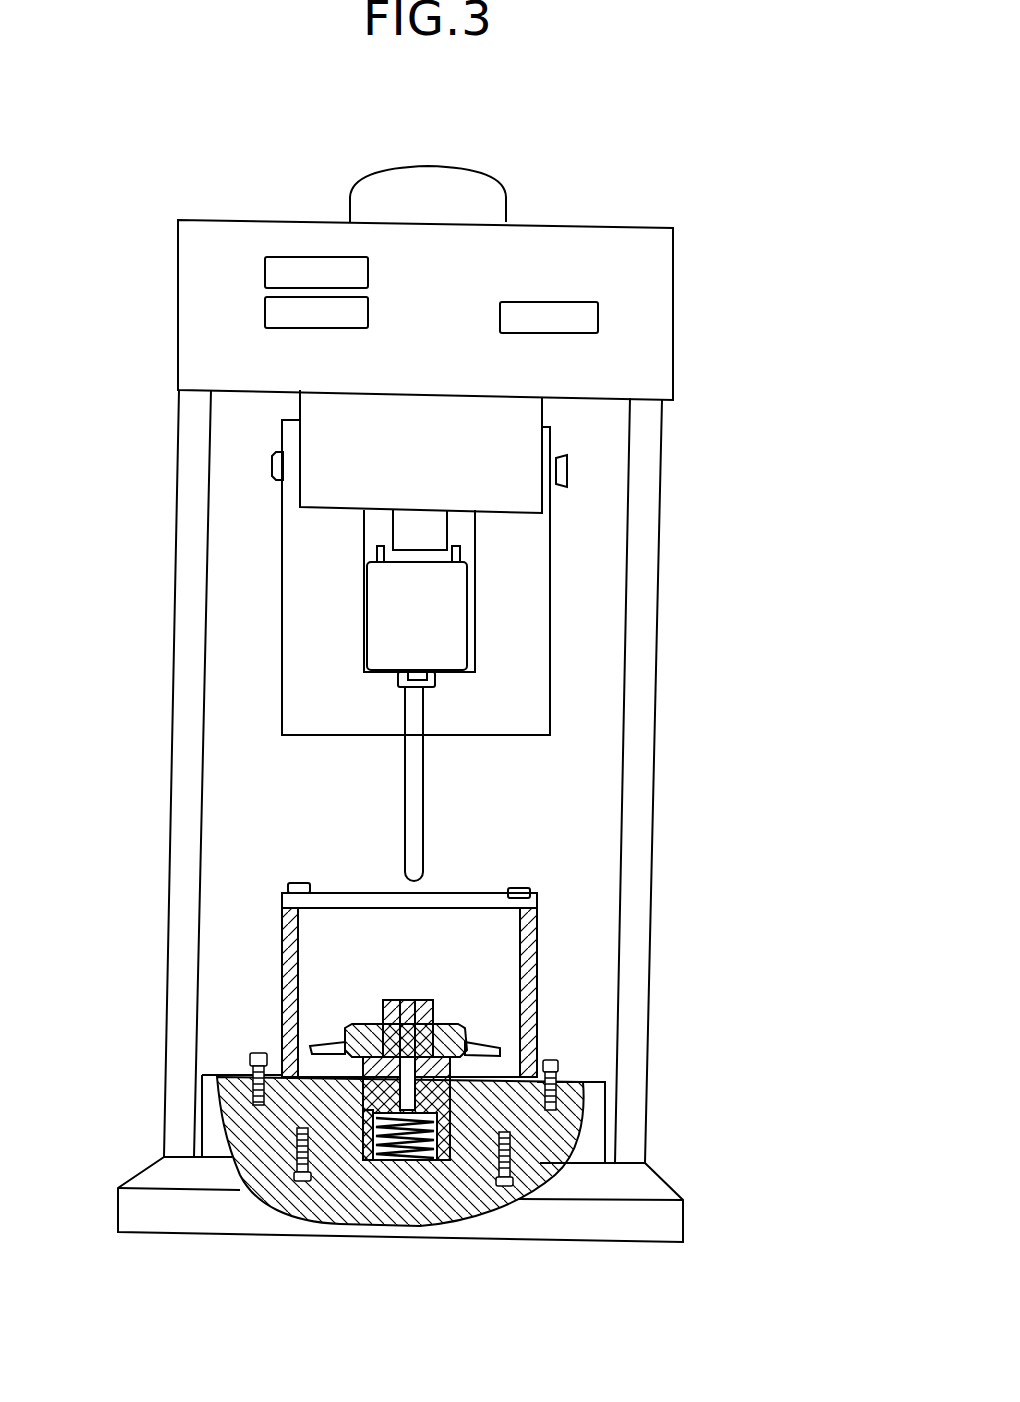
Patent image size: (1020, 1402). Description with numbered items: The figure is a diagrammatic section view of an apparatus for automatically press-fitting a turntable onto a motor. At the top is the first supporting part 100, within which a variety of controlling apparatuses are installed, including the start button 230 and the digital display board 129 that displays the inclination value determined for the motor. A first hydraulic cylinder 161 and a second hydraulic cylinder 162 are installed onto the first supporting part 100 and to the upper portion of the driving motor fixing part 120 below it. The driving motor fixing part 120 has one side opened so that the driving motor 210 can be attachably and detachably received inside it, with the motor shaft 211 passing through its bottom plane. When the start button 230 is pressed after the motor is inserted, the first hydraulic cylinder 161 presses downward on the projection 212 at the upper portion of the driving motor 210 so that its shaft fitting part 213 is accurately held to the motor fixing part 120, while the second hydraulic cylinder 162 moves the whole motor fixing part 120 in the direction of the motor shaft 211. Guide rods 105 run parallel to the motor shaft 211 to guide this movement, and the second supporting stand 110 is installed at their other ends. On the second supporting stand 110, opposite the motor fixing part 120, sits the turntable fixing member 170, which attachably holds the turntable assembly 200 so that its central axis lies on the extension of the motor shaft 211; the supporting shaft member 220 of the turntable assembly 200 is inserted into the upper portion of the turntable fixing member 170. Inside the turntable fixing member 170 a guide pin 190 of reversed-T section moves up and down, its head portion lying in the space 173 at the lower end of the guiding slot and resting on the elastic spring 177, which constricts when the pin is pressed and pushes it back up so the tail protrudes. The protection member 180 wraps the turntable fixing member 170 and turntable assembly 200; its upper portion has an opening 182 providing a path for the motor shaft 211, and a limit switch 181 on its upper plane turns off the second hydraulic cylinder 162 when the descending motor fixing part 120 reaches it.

The first supporting part 100 is at (653, 348).
The guide rods 105 is at (647, 432).
The second supporting stand 110 is at (610, 1220).
The driving motor fixing part 120 is at (527, 612).
The digital display board 129 is at (553, 315).
The first hydraulic cylinder 161 is at (433, 528).
The second hydraulic cylinder 162 is at (513, 468).
The turntable fixing member 170 is at (472, 1183).
The space 173 is at (410, 1150).
The elastic spring 177 is at (360, 1180).
The protection member 180 is at (429, 956).
The limit switch 181 is at (523, 888).
The opening 182 is at (352, 898).
The guide pin 190 is at (514, 1190).
The turntable assembly 200 is at (529, 982).
The driving motor 210 is at (415, 695).
The motor shaft 211 is at (417, 838).
The projection 212 is at (412, 558).
The shaft fitting part 213 is at (408, 681).
The supporting shaft member 220 is at (467, 1028).
The start button 230 is at (287, 273).